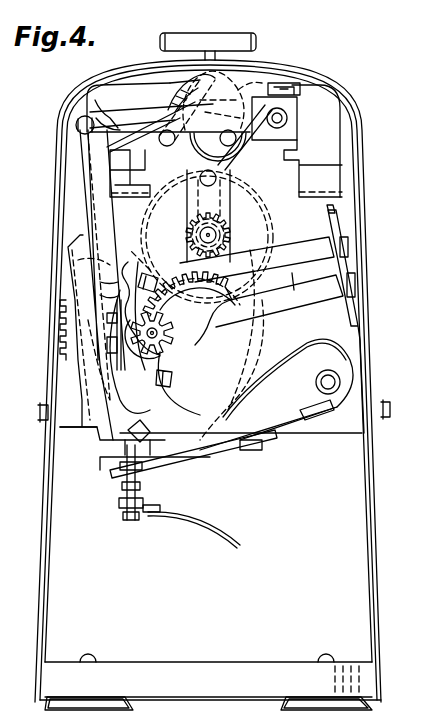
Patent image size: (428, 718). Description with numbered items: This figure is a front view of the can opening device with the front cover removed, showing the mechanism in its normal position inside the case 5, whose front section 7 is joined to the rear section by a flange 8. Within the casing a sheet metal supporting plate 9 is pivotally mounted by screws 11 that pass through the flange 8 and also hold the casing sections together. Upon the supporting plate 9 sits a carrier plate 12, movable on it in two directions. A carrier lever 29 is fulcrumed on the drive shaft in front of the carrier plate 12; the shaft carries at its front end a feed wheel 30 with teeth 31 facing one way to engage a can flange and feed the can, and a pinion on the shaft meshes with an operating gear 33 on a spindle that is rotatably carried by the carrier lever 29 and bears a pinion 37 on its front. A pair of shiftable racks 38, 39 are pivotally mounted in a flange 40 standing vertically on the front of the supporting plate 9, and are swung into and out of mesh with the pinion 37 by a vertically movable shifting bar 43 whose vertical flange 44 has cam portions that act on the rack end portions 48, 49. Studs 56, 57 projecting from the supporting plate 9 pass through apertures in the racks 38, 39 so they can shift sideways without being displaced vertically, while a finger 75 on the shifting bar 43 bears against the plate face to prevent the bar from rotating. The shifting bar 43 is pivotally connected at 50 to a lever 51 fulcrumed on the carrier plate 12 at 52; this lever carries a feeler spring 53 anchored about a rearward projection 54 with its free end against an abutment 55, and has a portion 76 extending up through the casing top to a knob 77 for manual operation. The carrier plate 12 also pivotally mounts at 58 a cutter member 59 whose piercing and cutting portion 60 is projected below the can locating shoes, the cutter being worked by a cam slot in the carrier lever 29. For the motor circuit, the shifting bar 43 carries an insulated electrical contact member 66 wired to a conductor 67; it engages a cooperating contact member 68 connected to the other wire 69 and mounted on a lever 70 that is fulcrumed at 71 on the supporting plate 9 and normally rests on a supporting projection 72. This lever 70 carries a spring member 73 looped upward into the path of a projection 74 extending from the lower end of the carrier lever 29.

The case 5 is at (385, 501).
The front section 7 is at (210, 33).
The flange 8 is at (381, 548).
The supporting plate 9 is at (70, 262).
The screws 11 is at (38, 414).
The carrier plate 12 is at (341, 106).
The carrier lever 29 is at (234, 205).
The feed wheel 30 is at (195, 226).
The teeth 31 is at (231, 226).
The operating gear 33 is at (60, 326).
The pinion 37 is at (182, 315).
The shiftable rack 38 is at (257, 259).
The shiftable rack 39 is at (269, 309).
The flange 40 is at (338, 226).
The shifting bar 43 is at (79, 160).
The vertical flange 44 is at (100, 282).
The end portion 48 is at (106, 317).
The end portion 49 is at (106, 346).
The pivotal connection 50 is at (76, 124).
The lever 51 is at (115, 118).
The fulcrum 52 is at (288, 121).
The spring 53 is at (236, 150).
The projection 54 is at (284, 84).
The abutment 55 is at (98, 100).
The stud 56 is at (172, 378).
The stud 57 is at (132, 248).
The pivot 58 is at (232, 135).
The cutter member 59 is at (238, 98).
The piercing and cutting portion 60 is at (186, 161).
The electrical contact member 66 is at (160, 508).
The conductor 67 is at (200, 522).
The cooperating contact member 68 is at (125, 487).
The wire 69 is at (210, 458).
The lever 70 is at (275, 425).
The fulcrum 71 is at (318, 385).
The supporting projection 72 is at (256, 450).
The spring member 73 is at (292, 352).
The projection 74 is at (220, 415).
The finger 75 is at (135, 425).
The portion 76 is at (178, 86).
The knob 77 is at (257, 43).